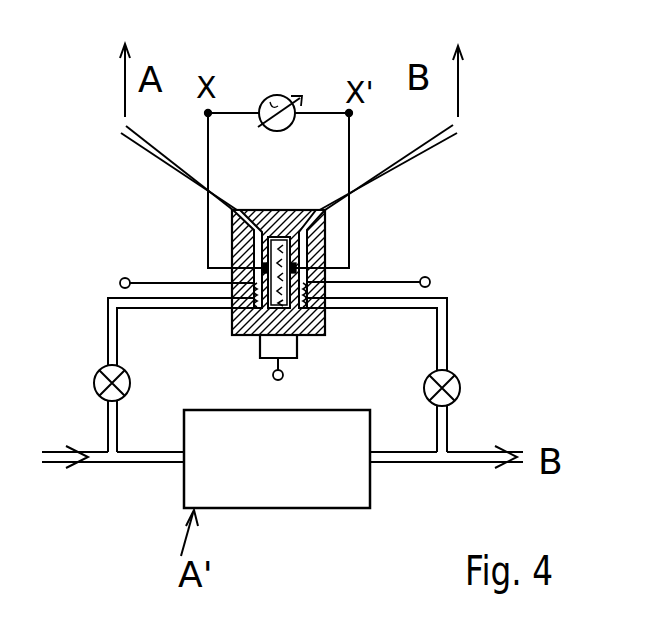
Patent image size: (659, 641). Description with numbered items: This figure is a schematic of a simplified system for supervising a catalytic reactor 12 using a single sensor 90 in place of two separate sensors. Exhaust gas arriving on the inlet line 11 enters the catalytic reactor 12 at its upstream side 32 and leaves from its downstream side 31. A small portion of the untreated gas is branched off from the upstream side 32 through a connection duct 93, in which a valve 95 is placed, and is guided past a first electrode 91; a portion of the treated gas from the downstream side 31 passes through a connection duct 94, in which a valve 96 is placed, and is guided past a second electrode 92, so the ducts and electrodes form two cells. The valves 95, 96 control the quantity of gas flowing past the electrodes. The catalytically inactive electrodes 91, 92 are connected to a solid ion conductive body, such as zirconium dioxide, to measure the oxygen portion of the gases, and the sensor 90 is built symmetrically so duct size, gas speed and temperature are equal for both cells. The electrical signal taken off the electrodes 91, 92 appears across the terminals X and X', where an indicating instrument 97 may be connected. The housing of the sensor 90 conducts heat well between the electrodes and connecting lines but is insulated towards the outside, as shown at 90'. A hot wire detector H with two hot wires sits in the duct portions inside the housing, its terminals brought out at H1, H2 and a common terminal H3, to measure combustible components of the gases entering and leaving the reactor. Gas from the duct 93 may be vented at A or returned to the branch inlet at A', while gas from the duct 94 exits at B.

The sensor 90 is at (277, 293).
The housing insulation 90' is at (279, 253).
The first electrode 91 is at (240, 267).
The second electrode 92 is at (298, 265).
The indicating instrument 97 is at (278, 95).
The hot wire terminal H1 is at (169, 282).
The hot wire terminal H2 is at (389, 281).
The hot wire detector H is at (258, 347).
The common terminal H3 is at (283, 377).
The connection duct 93 is at (108, 325).
The connection duct 94 is at (447, 325).
The valve 95 is at (96, 377).
The valve 96 is at (458, 383).
The upstream side 32 is at (105, 450).
The downstream side 31 is at (454, 452).
The inlet line 11 is at (37, 463).
The catalytic reactor 12 is at (243, 510).